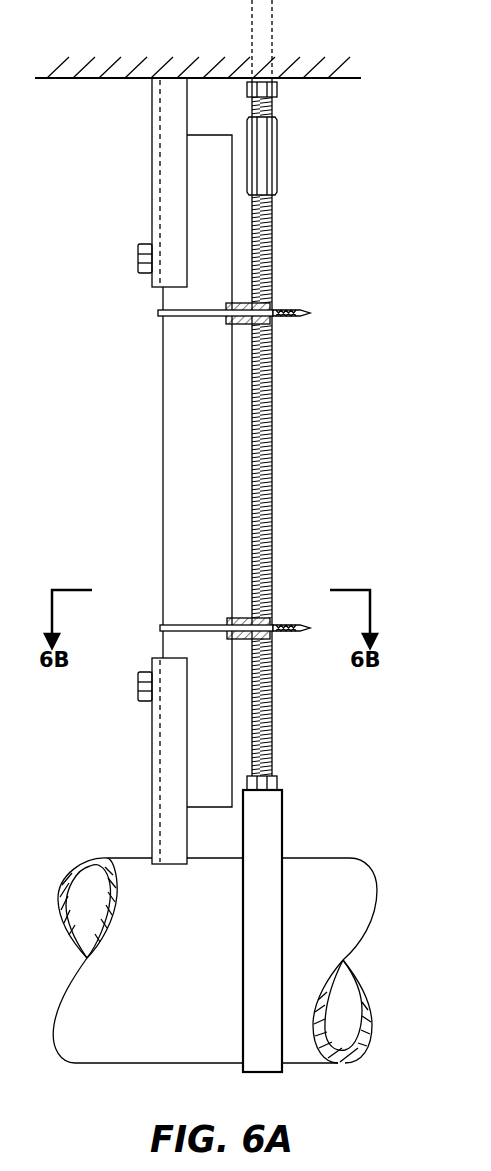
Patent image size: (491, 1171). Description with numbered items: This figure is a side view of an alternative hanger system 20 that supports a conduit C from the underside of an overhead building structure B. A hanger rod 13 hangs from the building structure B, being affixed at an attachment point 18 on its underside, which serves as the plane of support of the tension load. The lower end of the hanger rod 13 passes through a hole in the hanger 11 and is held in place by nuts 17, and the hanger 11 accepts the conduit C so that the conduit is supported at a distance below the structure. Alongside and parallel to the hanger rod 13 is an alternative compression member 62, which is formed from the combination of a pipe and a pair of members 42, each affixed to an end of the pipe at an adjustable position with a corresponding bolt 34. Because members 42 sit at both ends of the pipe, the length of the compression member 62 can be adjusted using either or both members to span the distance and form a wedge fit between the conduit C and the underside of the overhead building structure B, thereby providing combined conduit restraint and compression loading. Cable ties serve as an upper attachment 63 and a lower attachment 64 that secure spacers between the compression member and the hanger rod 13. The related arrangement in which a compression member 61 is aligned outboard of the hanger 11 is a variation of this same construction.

The hanger 11 is at (287, 812).
The hanger rod 13 is at (273, 415).
The nuts 17 is at (269, 786).
The attachment point 18 is at (274, 78).
The hanger system 20 is at (205, 536).
The bolt 34 is at (138, 262).
The members 42 is at (153, 124).
The compression member 61 is at (182, 465).
The compression member 62 is at (121, 471).
The upper attachment 63 is at (277, 304).
The lower attachment 64 is at (277, 619).
The overhead building structure B is at (143, 80).
The conduit C is at (320, 868).